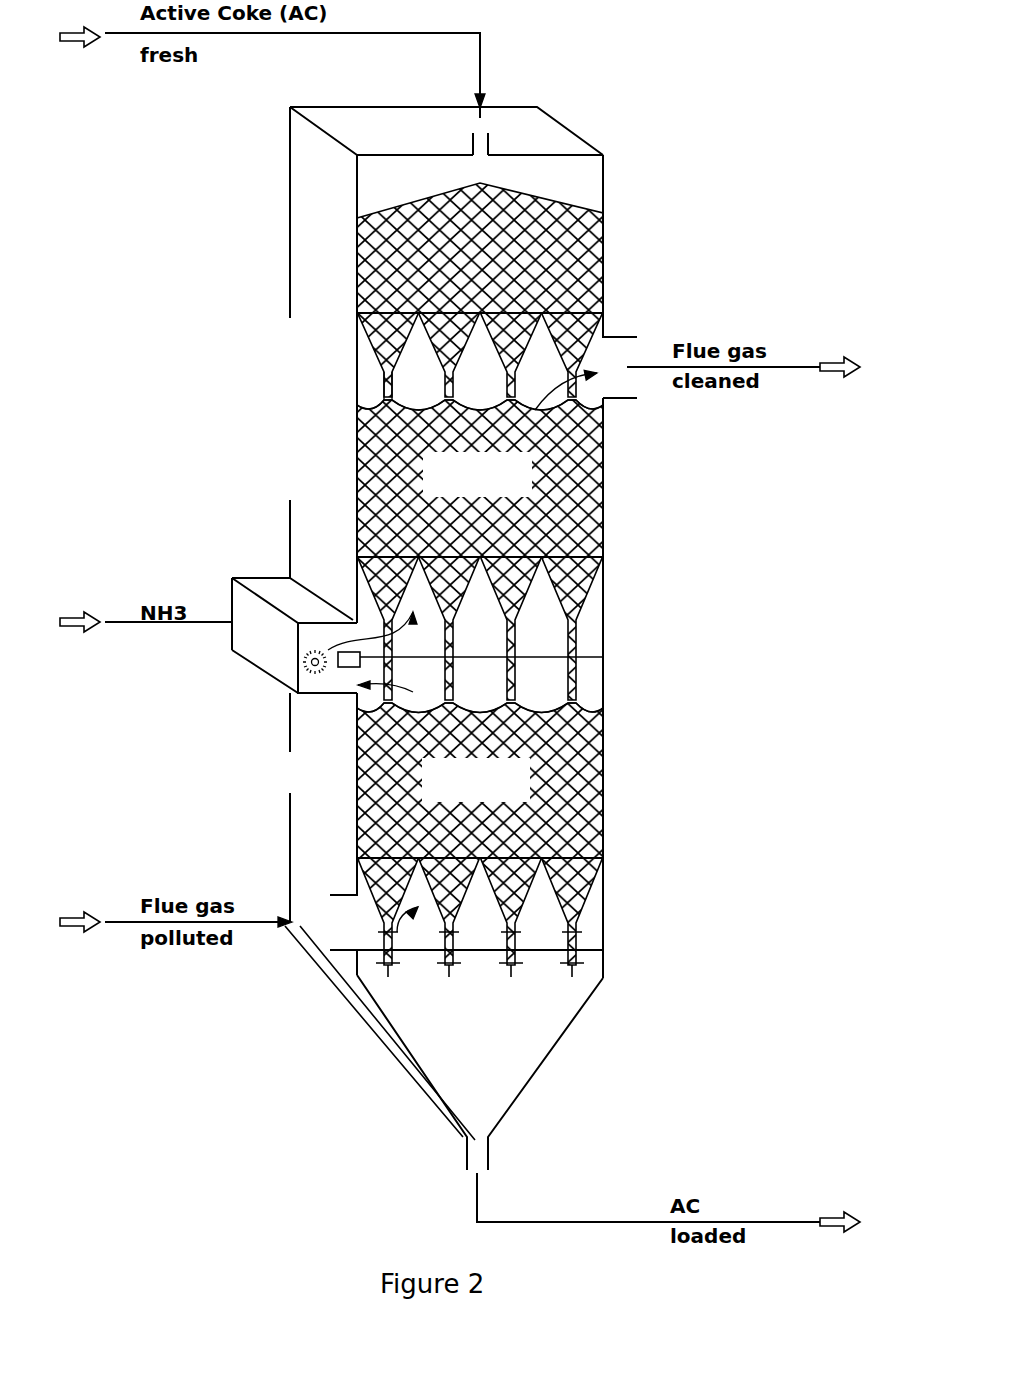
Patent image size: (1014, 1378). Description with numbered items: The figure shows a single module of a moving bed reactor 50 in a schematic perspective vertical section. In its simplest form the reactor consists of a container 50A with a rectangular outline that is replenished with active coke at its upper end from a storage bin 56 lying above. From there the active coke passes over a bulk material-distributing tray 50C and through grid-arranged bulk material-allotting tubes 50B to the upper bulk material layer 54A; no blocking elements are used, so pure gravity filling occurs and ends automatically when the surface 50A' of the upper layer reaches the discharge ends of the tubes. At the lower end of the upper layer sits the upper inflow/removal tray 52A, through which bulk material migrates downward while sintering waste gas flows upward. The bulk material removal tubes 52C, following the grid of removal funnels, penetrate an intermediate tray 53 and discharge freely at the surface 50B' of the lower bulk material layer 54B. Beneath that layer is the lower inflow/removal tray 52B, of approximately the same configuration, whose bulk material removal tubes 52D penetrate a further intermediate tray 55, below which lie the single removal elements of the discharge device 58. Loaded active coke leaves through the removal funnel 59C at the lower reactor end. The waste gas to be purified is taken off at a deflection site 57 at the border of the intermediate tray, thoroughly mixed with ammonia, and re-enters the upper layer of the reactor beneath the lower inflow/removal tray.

The moving bed reactor 50 is at (553, 122).
The container 50A is at (297, 514).
The surface 50A' is at (420, 421).
The bulk material-allotting tube 50B is at (315, 387).
The surface 50B' is at (540, 711).
The bulk material-distributing tray 50C is at (357, 342).
The upper inflow/removal tray 52A is at (610, 552).
The lower inflow/removal tray 52B is at (612, 856).
The bulk material removal tube 52C is at (603, 632).
The bulk material removal tube 52D is at (575, 931).
The intermediate tray 53 is at (603, 673).
The upper bulk material layer 54A is at (412, 465).
The lower bulk material layer 54B is at (397, 777).
The intermediate tray 55 is at (588, 953).
The storage bin 56 is at (535, 218).
The deflection site 57 is at (315, 700).
The discharge elements 58 is at (370, 970).
The removal funnel 59C is at (545, 1058).